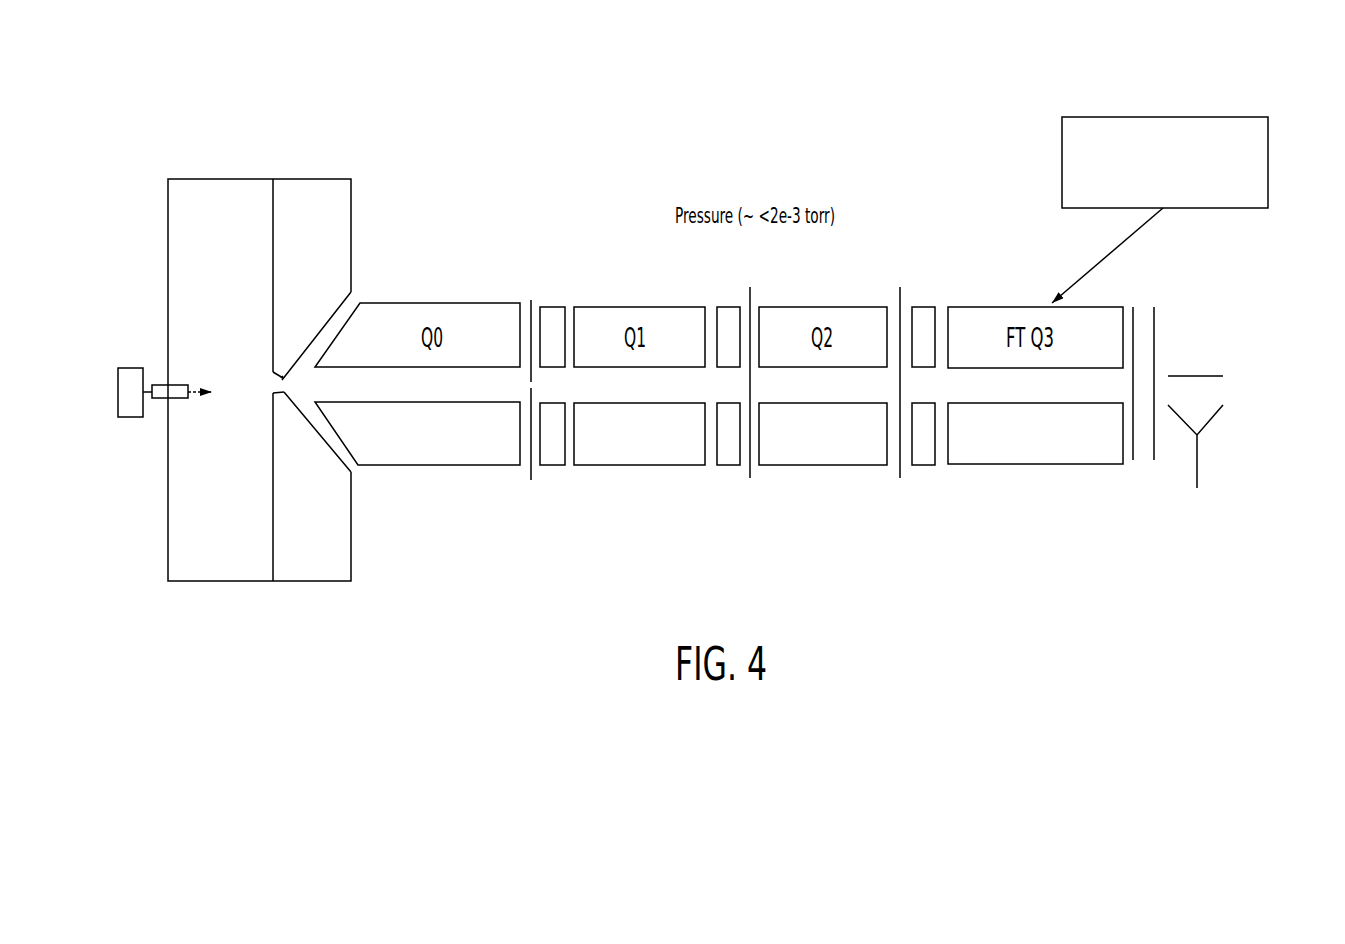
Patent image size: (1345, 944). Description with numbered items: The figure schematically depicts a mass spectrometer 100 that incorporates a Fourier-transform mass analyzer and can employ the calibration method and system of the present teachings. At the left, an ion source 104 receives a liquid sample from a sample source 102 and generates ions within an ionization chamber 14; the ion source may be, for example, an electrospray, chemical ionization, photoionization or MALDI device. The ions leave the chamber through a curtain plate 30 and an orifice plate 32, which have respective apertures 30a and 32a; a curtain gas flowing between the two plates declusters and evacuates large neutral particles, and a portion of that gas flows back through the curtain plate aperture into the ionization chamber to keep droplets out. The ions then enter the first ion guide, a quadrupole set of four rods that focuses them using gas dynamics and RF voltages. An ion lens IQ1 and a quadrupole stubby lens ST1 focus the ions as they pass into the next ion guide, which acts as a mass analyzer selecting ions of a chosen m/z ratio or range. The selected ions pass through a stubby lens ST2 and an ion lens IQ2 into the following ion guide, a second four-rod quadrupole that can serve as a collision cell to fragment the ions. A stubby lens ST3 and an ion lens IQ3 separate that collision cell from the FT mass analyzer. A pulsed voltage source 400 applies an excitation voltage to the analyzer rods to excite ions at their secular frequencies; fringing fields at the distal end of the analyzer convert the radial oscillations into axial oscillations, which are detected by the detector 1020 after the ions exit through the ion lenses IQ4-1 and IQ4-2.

The mass spectrometer 100 is at (460, 115).
The ionization chamber 14 is at (208, 567).
The curtain plate 30 is at (272, 200).
The curtain plate aperture 30a is at (273, 385).
The orifice plate 32 is at (340, 463).
The orifice plate aperture 32a is at (282, 378).
The sample source 102 is at (133, 374).
The ion source 104 is at (160, 400).
The pulsed voltage source 400 is at (1268, 160).
The detector 1020 is at (1197, 376).
The ion lens IQ1 is at (531, 300).
The quadrupole stubby lens ST1 is at (546, 307).
The stubby lens ST2 is at (726, 307).
The ion lens IQ2 is at (750, 287).
The ion lens IQ3 is at (897, 478).
The stubby lens ST3 is at (925, 470).
The ion lens IQ4-1 is at (1133, 460).
The ion lens IQ4-2 is at (1154, 460).